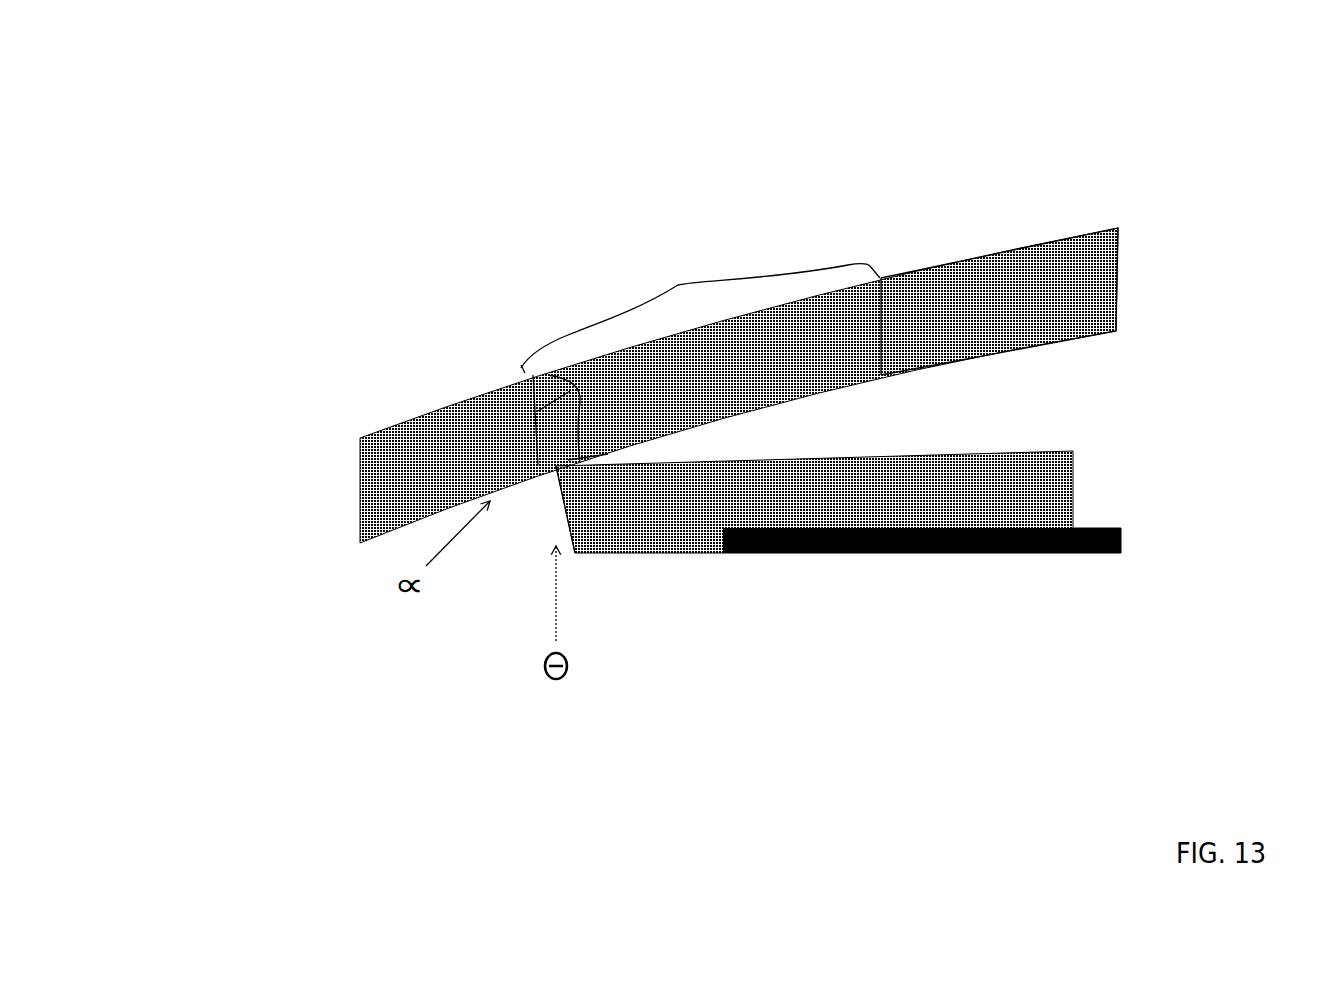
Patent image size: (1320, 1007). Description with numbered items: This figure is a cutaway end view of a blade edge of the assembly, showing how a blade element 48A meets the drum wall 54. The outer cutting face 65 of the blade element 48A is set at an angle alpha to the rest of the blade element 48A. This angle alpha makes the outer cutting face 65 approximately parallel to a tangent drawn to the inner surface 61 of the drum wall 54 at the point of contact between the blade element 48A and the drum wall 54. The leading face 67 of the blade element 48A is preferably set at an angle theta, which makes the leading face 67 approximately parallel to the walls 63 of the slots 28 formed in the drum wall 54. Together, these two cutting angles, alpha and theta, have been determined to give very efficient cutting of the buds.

The slots 28 is at (670, 277).
The blade element 48A is at (950, 227).
The drum wall 54 is at (1110, 255).
The inner surface 61 is at (1088, 328).
The walls 63 is at (537, 363).
The outer cutting face 65 is at (573, 457).
The leading face 67 is at (543, 522).